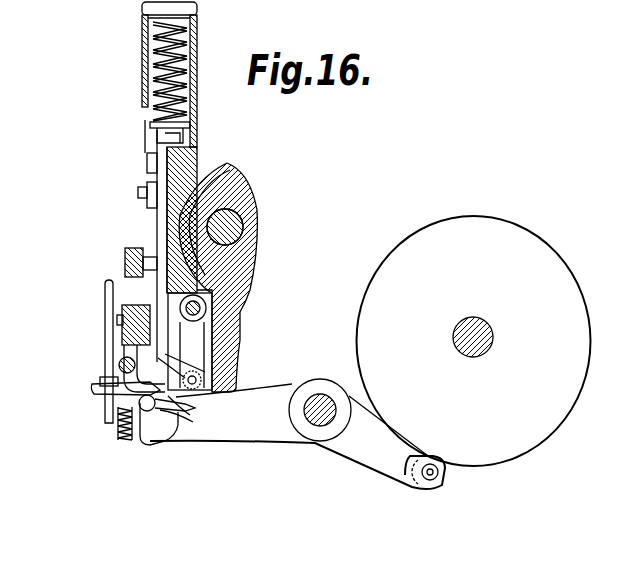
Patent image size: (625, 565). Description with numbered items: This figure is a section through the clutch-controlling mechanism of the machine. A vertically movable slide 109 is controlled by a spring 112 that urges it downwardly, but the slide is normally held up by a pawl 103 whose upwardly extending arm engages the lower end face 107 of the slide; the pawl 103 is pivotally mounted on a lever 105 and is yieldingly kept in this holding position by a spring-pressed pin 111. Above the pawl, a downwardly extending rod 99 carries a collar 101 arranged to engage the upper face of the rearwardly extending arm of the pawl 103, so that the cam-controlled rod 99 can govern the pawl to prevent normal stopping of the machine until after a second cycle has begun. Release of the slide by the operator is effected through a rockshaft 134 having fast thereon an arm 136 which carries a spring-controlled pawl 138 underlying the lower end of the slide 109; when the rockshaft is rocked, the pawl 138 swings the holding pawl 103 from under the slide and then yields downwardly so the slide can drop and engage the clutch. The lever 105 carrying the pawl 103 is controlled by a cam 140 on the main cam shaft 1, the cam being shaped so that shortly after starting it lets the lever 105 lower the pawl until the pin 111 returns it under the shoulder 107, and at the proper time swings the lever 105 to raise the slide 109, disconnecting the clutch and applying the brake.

The main cam shaft 1 is at (472, 354).
The rod 99 is at (106, 283).
The collar 101 is at (100, 379).
The pawl 103 is at (120, 393).
The lever 105 is at (262, 433).
The lower end face 107 is at (190, 410).
The slide 109 is at (160, 227).
The spring-pressed pin 111 is at (117, 425).
The spring 112 is at (197, 103).
The rockshaft 134 is at (207, 309).
The arm 136 is at (197, 336).
The spring-controlled pawl 138 is at (183, 359).
The cam 140 is at (523, 428).